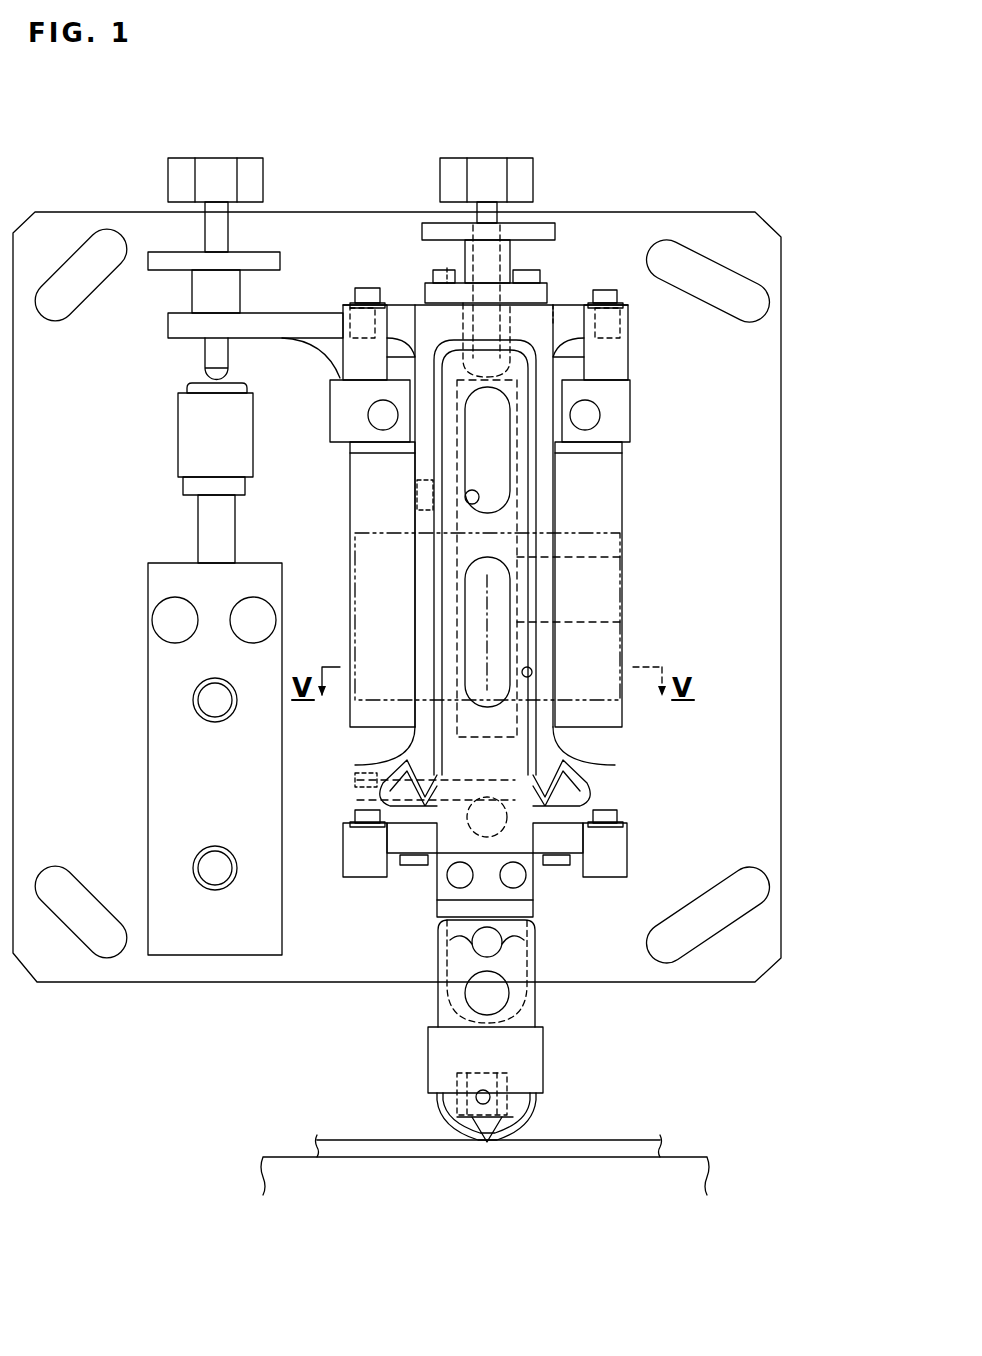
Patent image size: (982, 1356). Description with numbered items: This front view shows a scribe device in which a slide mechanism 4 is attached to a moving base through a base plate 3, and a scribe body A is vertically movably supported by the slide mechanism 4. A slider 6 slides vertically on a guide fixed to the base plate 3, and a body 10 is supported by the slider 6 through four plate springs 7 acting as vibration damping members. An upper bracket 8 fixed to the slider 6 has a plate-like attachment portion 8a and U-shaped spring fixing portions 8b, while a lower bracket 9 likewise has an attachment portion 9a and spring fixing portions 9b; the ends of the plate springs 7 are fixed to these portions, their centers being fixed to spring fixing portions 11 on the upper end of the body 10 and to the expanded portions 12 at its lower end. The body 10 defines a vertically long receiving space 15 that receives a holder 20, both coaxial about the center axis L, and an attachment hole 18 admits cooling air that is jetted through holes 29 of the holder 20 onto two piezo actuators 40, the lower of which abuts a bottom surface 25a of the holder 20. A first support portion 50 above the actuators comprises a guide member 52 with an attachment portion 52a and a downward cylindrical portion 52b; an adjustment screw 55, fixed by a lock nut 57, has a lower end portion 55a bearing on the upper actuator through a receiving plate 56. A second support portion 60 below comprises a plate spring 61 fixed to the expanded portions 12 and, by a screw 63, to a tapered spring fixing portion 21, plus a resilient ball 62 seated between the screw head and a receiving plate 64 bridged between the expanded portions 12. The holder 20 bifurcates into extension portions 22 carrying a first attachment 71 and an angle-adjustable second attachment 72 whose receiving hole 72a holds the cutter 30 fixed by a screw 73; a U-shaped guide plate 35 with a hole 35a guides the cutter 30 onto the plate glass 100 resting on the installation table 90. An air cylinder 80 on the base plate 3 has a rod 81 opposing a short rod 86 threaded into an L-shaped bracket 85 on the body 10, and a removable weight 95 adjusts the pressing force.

The base plate 3 is at (755, 212).
The slide mechanism 4 is at (565, 492).
The slider 6 is at (624, 508).
The plate spring 7 is at (365, 288).
The upper bracket 8 is at (640, 350).
The attachment portion 8a is at (615, 400).
The spring fixing portion 8b is at (340, 362).
The lower bracket 9 is at (632, 835).
The attachment portion 9a is at (608, 745).
The spring fixing portion 9b is at (343, 838).
The body 10 is at (624, 470).
The spring fixing portion 11 is at (345, 345).
The expanded portion 12 is at (355, 800).
The receiving space 15 is at (530, 672).
The attachment hole 18 is at (420, 500).
The holder 20 is at (548, 600).
The spring fixing portion 21 is at (617, 775).
The extension portion 22 is at (490, 888).
The bottom surface 25a is at (350, 717).
The hole 29 is at (470, 595).
The cutter 30 is at (486, 1144).
The guide plate 35 is at (440, 1122).
The hole 35a is at (508, 1132).
The piezo actuator 40 is at (598, 557).
The first support portion 50 is at (460, 325).
The guide member 52 is at (445, 318).
The attachment portion 52a is at (447, 273).
The cylindrical portion 52b is at (560, 320).
The adjustment screw 55 is at (530, 290).
The lower end portion 55a is at (482, 378).
The receiving plate 56 is at (520, 385).
The lock nut 57 is at (500, 265).
The second support portion 60 is at (447, 805).
The plate spring 61 is at (350, 776).
The ball 62 is at (478, 832).
The screw 63 is at (458, 812).
The receiving plate 64 is at (555, 842).
The first attachment 71 is at (530, 1007).
The second attachment 72 is at (428, 1042).
The receiving hole 72a is at (507, 1100).
The screw 73 is at (486, 1090).
The air cylinder 80 is at (165, 748).
The rod 81 is at (210, 521).
The L-shaped bracket 85 is at (281, 318).
The short rod 86 is at (210, 352).
The installation table 90 is at (690, 1157).
The weight 95 is at (630, 527).
The plate glass 100 is at (598, 1140).
The scribe body A is at (565, 473).
The center axis L is at (490, 632).